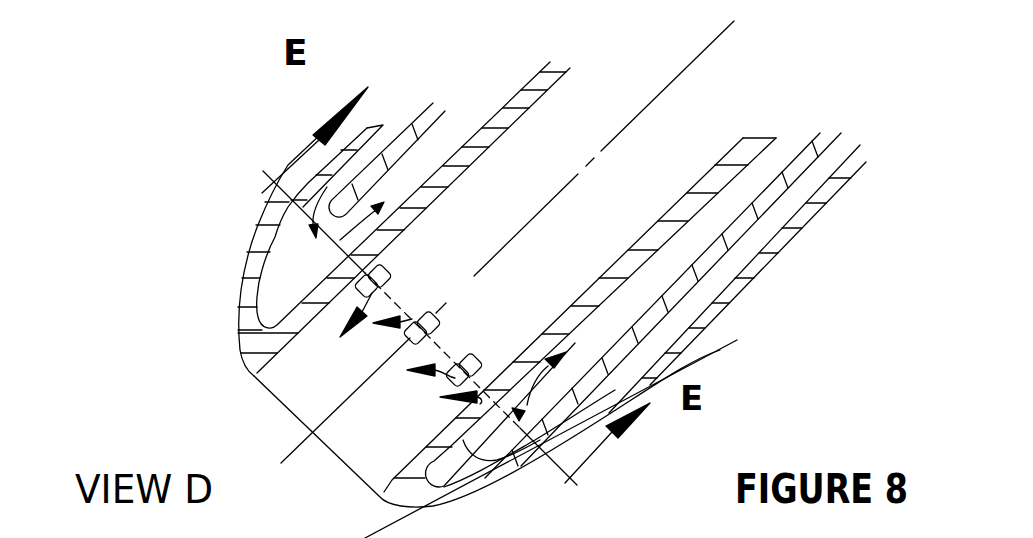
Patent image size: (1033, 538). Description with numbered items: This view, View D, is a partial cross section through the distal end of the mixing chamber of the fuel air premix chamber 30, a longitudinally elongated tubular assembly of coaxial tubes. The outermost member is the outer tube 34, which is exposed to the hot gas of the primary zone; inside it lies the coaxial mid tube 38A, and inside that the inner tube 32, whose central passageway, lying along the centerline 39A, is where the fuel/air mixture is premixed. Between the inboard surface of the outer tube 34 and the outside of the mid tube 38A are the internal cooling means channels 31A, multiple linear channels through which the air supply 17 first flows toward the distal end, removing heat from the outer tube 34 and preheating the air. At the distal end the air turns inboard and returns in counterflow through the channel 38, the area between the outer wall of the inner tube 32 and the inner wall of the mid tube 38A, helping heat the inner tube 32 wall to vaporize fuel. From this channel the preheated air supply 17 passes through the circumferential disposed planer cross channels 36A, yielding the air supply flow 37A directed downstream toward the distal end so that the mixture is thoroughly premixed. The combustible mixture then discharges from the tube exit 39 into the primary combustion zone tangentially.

The fuel air premix chamber 30 is at (237, 242).
The internal cooling means channels 31A is at (387, 133).
The inner tube 32 is at (700, 210).
The outer tube 34 is at (720, 287).
The circumferential disposed planer cross channels 36A is at (438, 399).
The air supply flow 37A is at (302, 381).
The channel 38 is at (447, 140).
The mid tube 38A is at (772, 190).
The tube exit 39 is at (303, 378).
The centerline 39A is at (303, 442).
The air supply 17 is at (571, 433).